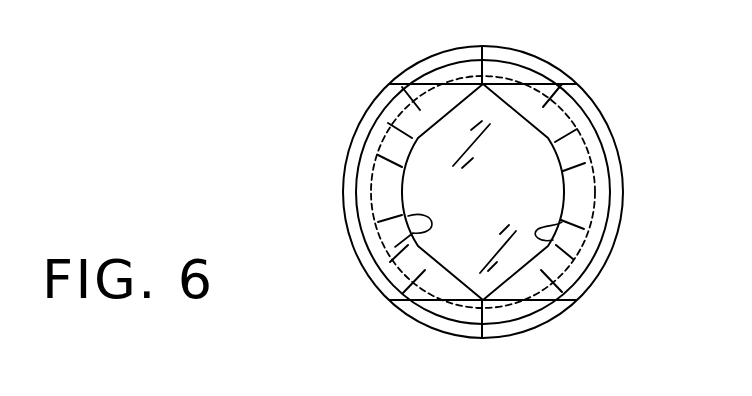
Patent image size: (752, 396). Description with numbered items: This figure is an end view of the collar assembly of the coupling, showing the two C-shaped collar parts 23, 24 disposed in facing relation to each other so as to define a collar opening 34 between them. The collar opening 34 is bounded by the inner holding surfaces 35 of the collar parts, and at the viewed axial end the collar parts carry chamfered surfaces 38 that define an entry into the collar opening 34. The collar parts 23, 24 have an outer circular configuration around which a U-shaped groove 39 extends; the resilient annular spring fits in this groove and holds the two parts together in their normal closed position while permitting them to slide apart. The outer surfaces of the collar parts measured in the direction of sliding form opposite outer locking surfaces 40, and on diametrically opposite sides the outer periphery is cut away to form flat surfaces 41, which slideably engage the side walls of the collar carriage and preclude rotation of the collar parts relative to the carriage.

The C-shaped collar part 23 is at (481, 192).
The C-shaped collar part 24 is at (602, 114).
The collar opening 34 is at (495, 216).
The inner holding surface 35 is at (408, 216).
The chamfered surface 38 is at (437, 108).
The U-shaped groove 39 is at (382, 134).
The outer locking surface 40 is at (343, 190).
The flat surface 41 is at (460, 84).